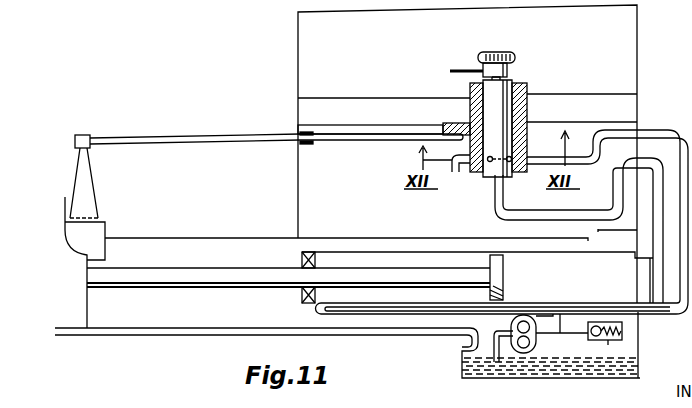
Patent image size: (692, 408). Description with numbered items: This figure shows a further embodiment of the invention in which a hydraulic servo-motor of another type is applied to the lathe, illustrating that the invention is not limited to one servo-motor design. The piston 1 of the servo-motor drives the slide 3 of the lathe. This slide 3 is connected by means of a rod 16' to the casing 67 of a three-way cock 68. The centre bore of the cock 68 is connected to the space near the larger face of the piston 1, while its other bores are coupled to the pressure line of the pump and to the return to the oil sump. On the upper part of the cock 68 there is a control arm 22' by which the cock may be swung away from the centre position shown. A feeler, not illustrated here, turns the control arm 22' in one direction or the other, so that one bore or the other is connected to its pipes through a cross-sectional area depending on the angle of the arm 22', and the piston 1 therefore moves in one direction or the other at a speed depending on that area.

The piston 1 is at (197, 272).
The slide 3 is at (76, 313).
The rod 16' is at (269, 130).
The control arm 22' is at (477, 65).
The casing 67 is at (520, 111).
The three-way cock 68 is at (492, 111).